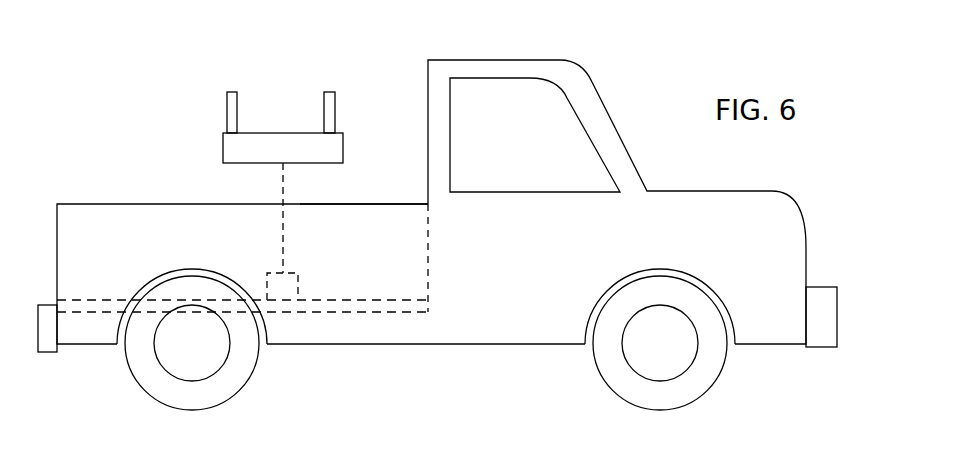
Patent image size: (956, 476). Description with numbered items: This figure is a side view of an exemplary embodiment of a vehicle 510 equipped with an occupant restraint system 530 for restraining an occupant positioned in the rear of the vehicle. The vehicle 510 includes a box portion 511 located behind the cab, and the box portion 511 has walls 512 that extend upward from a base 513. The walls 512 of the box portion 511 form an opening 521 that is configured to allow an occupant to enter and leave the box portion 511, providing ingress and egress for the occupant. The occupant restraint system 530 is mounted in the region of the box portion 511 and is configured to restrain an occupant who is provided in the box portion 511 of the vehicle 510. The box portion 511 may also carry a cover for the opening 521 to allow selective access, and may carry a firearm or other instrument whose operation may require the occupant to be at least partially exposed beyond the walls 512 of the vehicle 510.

The vehicle 510 is at (628, 56).
The box portion 511 is at (123, 195).
The walls 512 is at (334, 203).
The base 513 is at (335, 297).
The opening 521 is at (206, 188).
The occupant restraint system 530 is at (214, 80).